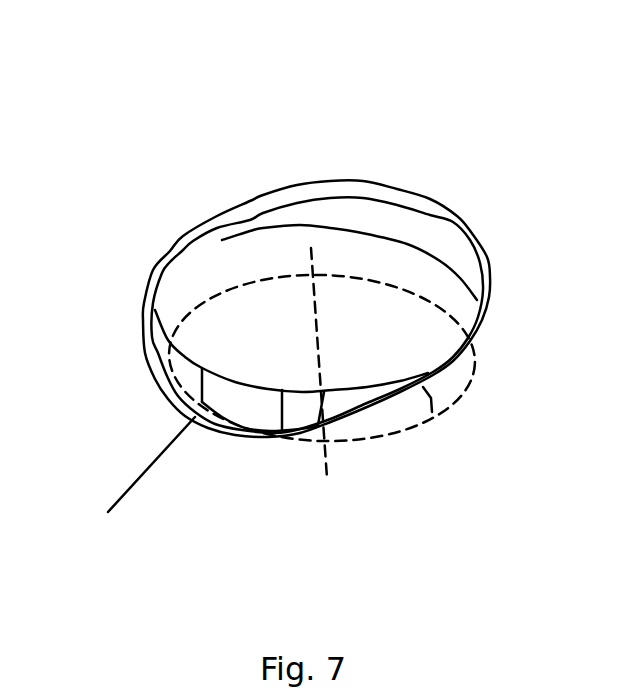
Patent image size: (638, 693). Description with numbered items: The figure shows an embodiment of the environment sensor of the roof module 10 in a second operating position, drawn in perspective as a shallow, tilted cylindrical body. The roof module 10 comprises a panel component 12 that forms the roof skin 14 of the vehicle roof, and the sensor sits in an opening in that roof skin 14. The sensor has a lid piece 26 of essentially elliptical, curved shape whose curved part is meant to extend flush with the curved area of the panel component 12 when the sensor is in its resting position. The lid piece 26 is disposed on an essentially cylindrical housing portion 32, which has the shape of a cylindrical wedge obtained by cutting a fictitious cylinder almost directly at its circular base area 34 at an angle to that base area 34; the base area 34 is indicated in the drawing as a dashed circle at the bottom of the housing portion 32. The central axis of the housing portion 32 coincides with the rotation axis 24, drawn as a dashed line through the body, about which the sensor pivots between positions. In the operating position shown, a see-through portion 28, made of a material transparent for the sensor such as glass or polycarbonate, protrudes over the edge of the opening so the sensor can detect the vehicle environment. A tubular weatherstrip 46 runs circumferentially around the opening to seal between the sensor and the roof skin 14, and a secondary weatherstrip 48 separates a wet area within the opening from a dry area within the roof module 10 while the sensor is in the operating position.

The roof module 10 is at (83, 272).
The panel component 12 is at (497, 152).
The roof skin 14 is at (350, 227).
The rotation axis 24 is at (318, 312).
The lid piece 26 is at (192, 272).
The see-through portion 28 is at (248, 403).
The housing portion 32 is at (175, 382).
The base area 34 is at (408, 423).
The weatherstrip 46 is at (398, 195).
The secondary weatherstrip 48 is at (420, 232).